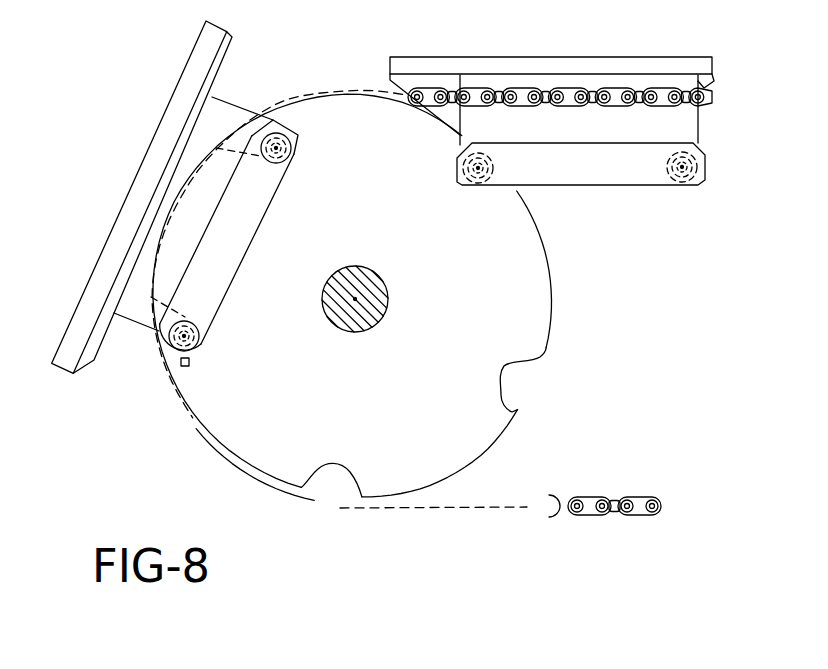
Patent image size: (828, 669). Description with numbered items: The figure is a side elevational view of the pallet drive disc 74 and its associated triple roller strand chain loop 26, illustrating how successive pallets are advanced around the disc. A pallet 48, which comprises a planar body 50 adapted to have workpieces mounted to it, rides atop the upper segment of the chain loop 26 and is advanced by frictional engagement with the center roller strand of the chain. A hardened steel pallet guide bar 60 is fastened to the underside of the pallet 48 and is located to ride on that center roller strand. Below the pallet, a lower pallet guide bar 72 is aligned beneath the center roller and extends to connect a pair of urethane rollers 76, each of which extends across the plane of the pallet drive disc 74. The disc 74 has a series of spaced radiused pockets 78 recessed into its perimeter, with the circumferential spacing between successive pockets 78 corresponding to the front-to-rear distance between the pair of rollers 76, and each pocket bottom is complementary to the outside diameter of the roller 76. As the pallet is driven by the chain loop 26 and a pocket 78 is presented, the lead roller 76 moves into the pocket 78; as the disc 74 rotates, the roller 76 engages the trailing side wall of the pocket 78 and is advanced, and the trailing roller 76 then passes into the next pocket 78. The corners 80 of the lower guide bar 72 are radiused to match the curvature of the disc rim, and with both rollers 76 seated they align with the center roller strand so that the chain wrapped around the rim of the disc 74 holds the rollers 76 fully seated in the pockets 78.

The chain loop 26 is at (530, 107).
The pallet 48 is at (120, 212).
The planar body 50 is at (440, 67).
The pallet guide bar 60 is at (398, 81).
The lower pallet guide bar 72 is at (207, 273).
The pallet drive disc 74 is at (403, 395).
The roller 76 is at (188, 362).
The radiused pocket 78 is at (300, 110).
The corner 80 is at (457, 152).